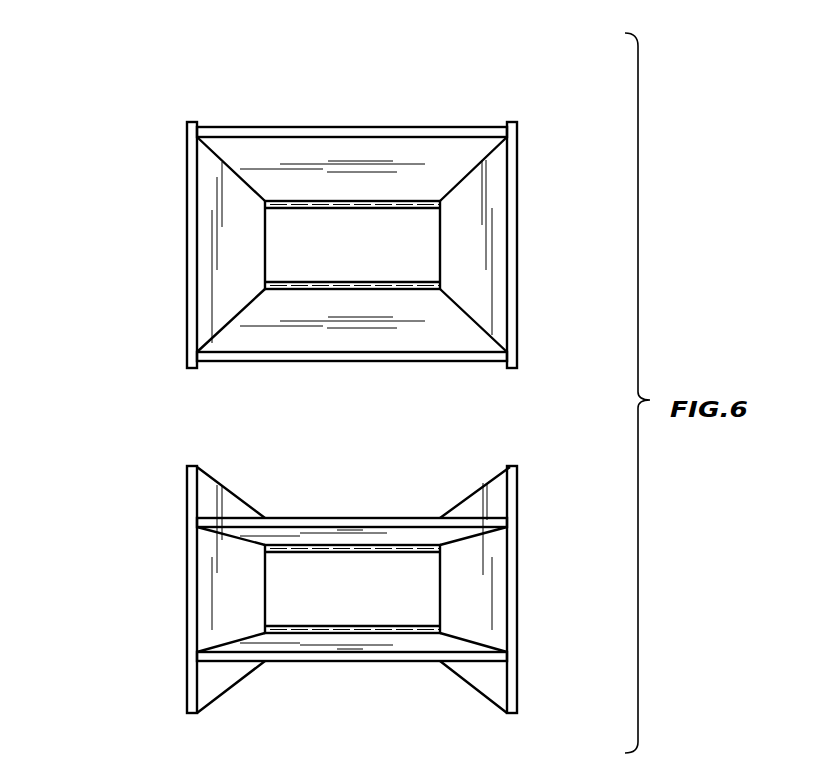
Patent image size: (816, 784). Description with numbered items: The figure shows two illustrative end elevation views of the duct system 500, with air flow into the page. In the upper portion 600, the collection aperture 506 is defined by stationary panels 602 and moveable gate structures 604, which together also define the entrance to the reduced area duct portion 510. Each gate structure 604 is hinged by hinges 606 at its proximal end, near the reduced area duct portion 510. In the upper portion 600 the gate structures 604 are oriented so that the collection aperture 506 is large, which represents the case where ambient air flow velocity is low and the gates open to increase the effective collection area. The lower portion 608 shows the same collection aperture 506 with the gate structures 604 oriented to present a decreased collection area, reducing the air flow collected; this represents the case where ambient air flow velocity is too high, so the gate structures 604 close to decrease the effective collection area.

The duct system 500 is at (175, 98).
The upper portion 600 is at (153, 217).
The stationary panels 602 is at (187, 158).
The moveable gate structures 604 is at (323, 128).
The collection aperture 506 is at (230, 273).
The reduced area duct portion 510 is at (420, 257).
The hinges 606 is at (352, 282).
The lower portion 608 is at (160, 547).